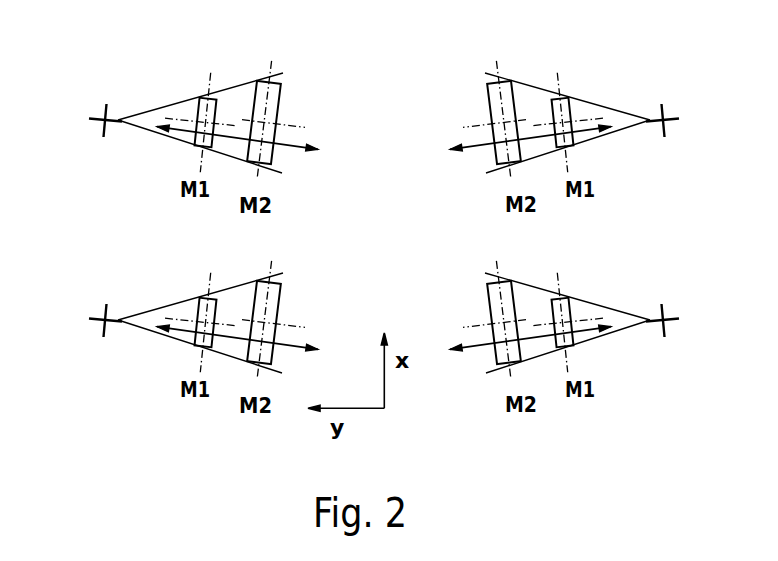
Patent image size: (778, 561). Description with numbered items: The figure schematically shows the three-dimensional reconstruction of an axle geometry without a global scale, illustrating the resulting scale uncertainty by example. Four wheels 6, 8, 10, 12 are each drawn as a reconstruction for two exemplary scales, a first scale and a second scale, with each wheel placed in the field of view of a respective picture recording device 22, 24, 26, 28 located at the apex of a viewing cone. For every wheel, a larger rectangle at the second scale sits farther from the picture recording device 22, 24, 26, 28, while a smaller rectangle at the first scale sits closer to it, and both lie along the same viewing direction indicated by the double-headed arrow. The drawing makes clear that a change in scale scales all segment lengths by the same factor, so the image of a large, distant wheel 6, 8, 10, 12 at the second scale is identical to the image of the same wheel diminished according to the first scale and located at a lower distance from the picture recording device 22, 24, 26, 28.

The wheel 6 is at (507, 82).
The wheel 8 is at (203, 97).
The wheel 10 is at (507, 282).
The wheel 12 is at (203, 297).
The picture recording device 22 is at (663, 113).
The picture recording device 24 is at (106, 105).
The picture recording device 26 is at (663, 313).
The picture recording device 28 is at (106, 305).